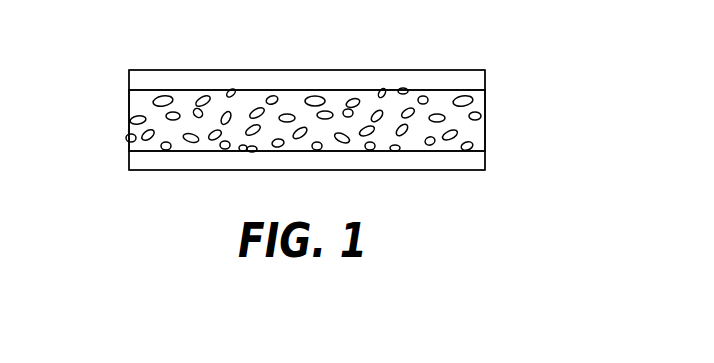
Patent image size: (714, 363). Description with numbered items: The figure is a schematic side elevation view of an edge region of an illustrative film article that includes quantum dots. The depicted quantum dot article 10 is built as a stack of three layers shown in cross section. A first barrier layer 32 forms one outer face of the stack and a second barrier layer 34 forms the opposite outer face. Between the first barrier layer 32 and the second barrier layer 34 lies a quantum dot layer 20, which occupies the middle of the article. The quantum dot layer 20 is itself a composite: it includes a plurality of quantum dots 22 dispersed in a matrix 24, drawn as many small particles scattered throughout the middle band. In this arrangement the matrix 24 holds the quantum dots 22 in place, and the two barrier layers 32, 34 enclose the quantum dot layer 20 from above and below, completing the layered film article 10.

The quantum dot article 10 is at (527, 79).
The quantum dot layer 20 is at (120, 126).
The quantum dots 22 is at (485, 113).
The matrix 24 is at (477, 136).
The first barrier layer 32 is at (423, 162).
The second barrier layer 34 is at (261, 80).